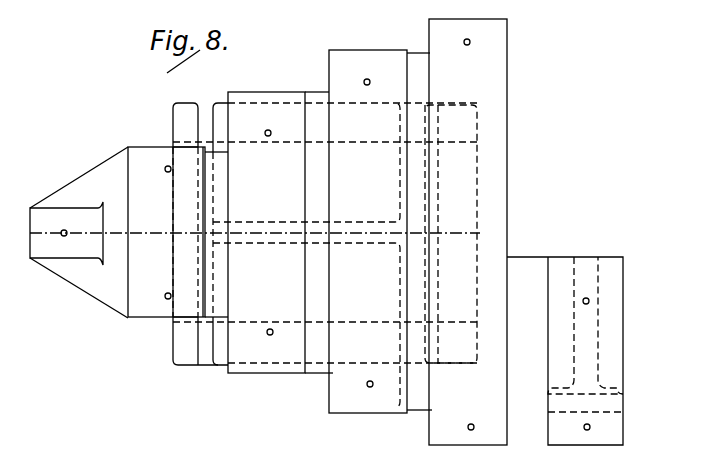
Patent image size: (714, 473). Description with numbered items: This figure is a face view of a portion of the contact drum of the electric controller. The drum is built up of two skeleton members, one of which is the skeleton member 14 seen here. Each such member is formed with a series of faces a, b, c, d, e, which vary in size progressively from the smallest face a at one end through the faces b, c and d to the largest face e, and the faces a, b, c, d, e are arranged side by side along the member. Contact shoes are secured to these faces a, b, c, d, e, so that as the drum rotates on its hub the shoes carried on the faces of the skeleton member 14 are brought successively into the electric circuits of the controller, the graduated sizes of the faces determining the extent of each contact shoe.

The face a is at (66, 233).
The face b is at (117, 232).
The face c is at (325, 249).
The face d is at (380, 231).
The face e is at (466, 232).
The skeleton member 14 is at (615, 328).